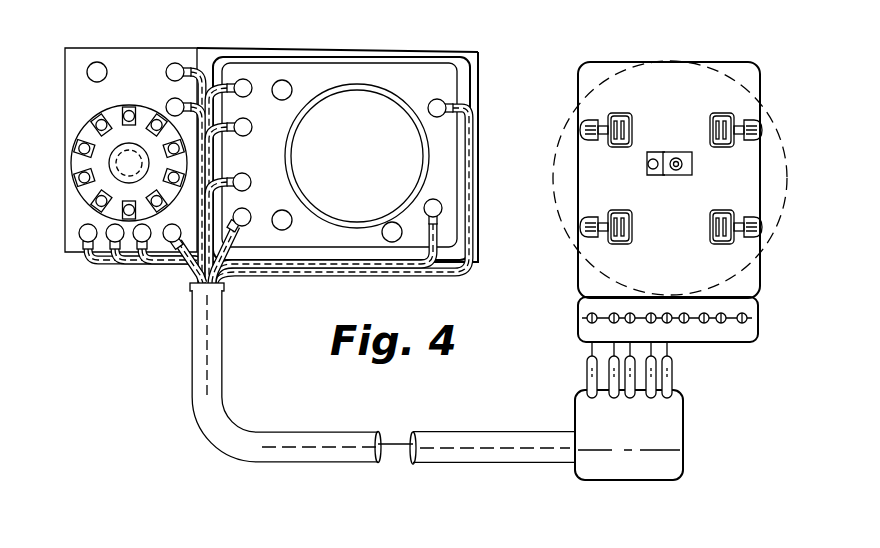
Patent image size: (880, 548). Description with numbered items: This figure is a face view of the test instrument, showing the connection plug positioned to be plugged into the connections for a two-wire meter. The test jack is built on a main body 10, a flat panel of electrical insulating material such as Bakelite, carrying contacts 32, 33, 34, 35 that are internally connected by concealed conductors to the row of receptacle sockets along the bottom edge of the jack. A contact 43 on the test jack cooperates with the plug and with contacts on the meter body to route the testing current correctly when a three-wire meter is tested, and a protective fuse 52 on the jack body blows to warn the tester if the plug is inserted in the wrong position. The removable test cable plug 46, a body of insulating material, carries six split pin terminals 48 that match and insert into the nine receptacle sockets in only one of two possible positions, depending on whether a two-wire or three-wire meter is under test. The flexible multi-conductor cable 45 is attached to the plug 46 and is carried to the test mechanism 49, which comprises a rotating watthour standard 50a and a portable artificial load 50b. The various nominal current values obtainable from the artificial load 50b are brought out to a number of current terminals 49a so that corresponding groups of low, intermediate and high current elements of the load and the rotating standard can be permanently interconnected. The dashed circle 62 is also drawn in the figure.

The main body 10 is at (755, 278).
The contact 32 is at (625, 117).
The contact 33 is at (718, 117).
The contact 34 is at (722, 243).
The contact 35 is at (620, 243).
The contact on the test jack 43 is at (675, 142).
The flexible multi-conductor cable 45 is at (520, 445).
The test cable plug 46 is at (665, 440).
The split pin terminals 48 is at (672, 371).
The test mechanism 49 is at (157, 60).
The current terminals 49a is at (109, 242).
The rotating watthour standard 50a is at (377, 110).
The artificial load 50b is at (128, 137).
The protective fuse 52 is at (648, 165).
The circular cover 62 is at (758, 238).